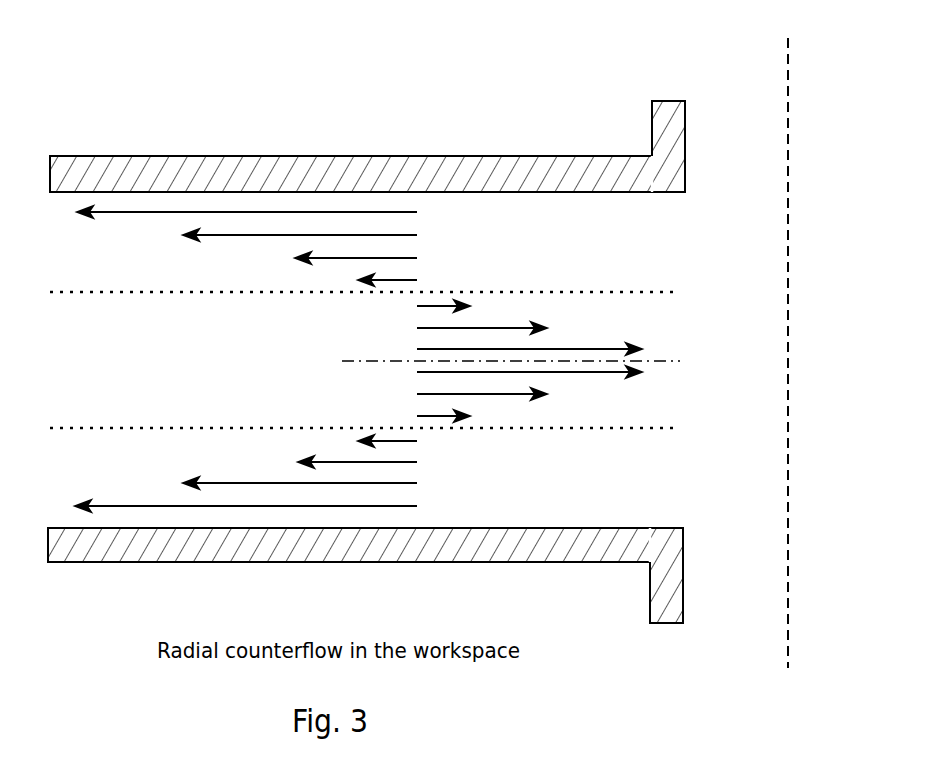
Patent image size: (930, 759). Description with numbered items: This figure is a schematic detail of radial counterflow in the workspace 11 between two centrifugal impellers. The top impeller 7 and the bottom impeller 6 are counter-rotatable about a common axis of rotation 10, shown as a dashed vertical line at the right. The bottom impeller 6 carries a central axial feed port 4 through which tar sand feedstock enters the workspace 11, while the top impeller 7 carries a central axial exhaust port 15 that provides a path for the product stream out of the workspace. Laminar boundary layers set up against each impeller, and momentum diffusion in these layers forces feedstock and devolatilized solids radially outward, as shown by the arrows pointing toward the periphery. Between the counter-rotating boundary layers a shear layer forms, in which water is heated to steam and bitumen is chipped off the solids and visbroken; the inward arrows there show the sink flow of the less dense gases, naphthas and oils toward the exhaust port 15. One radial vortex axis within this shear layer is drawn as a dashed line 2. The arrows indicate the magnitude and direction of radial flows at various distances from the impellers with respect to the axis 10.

The radial vortex axis 2 is at (495, 361).
The central axial feed port 4 is at (697, 575).
The bottom impeller 6 is at (349, 565).
The top impeller 7 is at (351, 158).
The axis of rotation 10 is at (788, 354).
The workspace 11 is at (355, 359).
The central axial exhaust port 15 is at (701, 146).